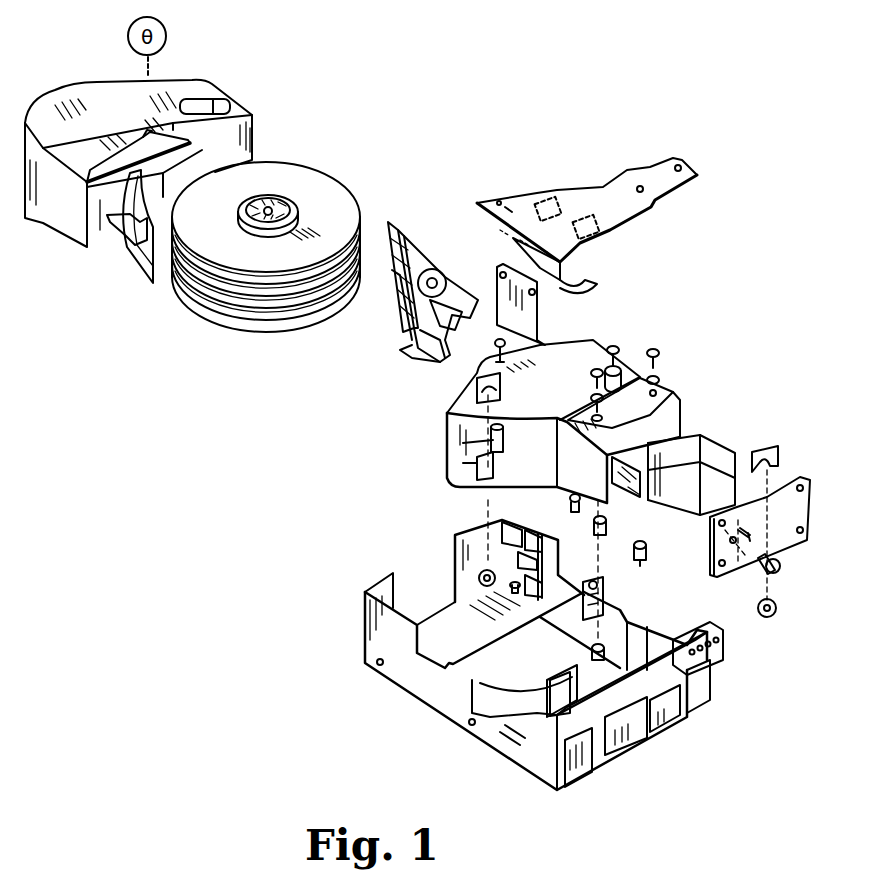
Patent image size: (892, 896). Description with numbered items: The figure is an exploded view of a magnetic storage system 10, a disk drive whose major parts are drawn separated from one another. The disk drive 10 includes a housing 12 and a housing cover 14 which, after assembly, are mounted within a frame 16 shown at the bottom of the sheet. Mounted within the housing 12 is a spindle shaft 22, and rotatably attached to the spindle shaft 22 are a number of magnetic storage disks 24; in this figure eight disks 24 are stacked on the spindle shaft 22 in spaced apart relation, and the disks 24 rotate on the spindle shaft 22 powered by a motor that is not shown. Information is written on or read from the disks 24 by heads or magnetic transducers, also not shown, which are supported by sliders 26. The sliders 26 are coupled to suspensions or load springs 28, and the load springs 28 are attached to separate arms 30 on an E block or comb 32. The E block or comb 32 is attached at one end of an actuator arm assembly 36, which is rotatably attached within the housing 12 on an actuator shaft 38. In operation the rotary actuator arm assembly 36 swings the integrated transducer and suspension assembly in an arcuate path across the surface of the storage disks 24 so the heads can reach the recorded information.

The magnetic storage system 10 is at (410, 140).
The housing 12 is at (598, 345).
The housing cover 14 is at (63, 227).
The frame 16 is at (418, 689).
The spindle shaft 22 is at (270, 210).
The magnetic storage disks 24 is at (230, 310).
The sliders 26 is at (393, 224).
The load springs 28 is at (400, 240).
The arms 30 is at (416, 265).
The E block or comb 32 is at (390, 290).
The actuator arm assembly 36 is at (412, 318).
The actuator shaft 38 is at (436, 280).